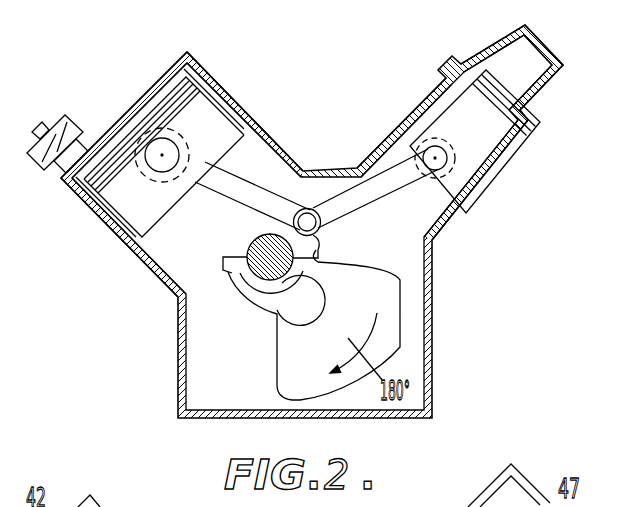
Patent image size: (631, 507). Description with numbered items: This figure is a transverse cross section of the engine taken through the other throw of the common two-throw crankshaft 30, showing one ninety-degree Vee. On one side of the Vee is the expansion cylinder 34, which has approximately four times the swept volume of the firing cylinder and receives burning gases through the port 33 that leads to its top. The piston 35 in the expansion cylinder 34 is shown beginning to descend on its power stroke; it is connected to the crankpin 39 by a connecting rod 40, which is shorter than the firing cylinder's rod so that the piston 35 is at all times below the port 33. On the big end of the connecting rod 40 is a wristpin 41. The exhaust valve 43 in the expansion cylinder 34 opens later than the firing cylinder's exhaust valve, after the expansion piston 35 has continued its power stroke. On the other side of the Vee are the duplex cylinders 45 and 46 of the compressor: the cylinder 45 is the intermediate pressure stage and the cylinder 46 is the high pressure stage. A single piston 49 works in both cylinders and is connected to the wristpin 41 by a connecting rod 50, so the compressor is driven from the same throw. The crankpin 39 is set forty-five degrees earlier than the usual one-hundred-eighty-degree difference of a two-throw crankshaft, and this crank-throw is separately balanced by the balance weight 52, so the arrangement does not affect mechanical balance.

The two-throw crankshaft 30 is at (267, 316).
The port 33 is at (116, 88).
The expansion cylinder 34 is at (230, 95).
The piston 35 is at (112, 226).
The crankpin 39 is at (245, 297).
The connecting rod 40 is at (160, 273).
The wristpin 41 is at (312, 205).
The exhaust valve 43 is at (76, 130).
The cylinder 45 is at (512, 157).
The cylinder 46 is at (550, 83).
The piston 49 is at (473, 183).
The connecting rod 50 is at (372, 188).
The balance weight 52 is at (393, 295).